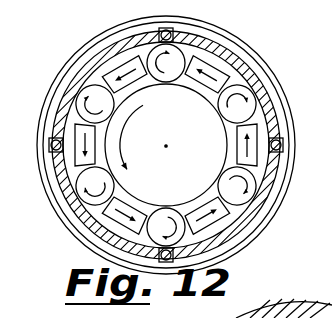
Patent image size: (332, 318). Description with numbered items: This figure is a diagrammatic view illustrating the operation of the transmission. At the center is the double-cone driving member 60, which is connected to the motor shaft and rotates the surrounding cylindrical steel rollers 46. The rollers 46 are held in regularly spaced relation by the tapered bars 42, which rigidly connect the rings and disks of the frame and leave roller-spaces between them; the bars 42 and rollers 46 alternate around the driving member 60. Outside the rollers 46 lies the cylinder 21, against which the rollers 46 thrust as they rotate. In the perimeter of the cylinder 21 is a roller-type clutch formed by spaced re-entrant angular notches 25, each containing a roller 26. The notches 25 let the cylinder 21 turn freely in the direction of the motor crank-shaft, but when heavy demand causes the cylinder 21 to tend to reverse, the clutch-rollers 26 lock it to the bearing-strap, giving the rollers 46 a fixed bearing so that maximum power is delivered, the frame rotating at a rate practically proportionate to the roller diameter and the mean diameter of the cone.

The cylinder 21 is at (281, 171).
The re-entrant angular notches 25 is at (58, 158).
The roller 26 is at (50, 150).
The tapered bars 42 is at (251, 143).
The cylindrical steel rollers 46 is at (243, 105).
The double-cone driving member 60 is at (166, 145).